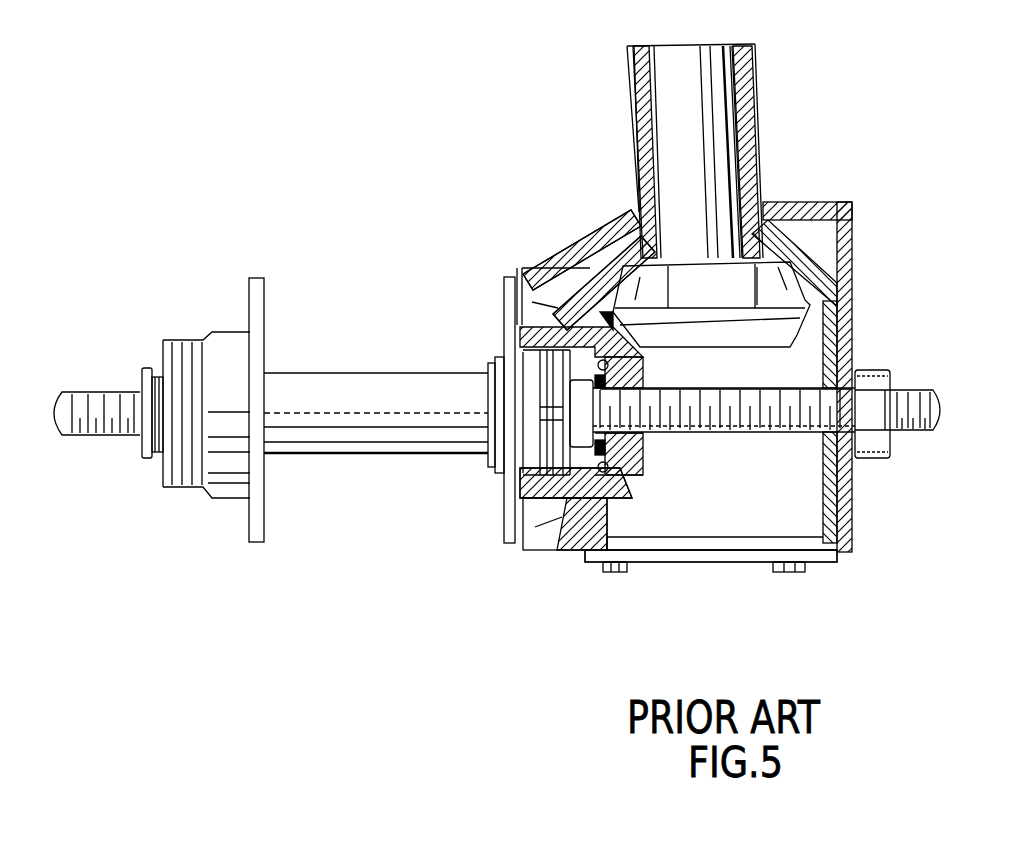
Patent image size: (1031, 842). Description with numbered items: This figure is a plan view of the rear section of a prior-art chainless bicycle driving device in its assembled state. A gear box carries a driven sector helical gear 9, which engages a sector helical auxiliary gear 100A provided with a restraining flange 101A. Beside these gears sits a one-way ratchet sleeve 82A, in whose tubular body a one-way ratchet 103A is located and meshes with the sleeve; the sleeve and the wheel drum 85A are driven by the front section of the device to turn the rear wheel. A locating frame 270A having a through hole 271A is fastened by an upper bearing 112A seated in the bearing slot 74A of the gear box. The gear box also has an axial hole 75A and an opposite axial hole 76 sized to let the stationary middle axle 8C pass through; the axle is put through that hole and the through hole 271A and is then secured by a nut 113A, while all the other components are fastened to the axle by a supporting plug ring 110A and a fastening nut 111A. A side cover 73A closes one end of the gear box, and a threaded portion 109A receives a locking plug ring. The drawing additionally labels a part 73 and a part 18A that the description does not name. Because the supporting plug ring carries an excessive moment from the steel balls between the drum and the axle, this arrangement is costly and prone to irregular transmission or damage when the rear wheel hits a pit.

The drive shaft tube 73 is at (717, 85).
The one-way ratchet sleeve 82A is at (520, 300).
The one-way ratchet 103A is at (544, 213).
The upper bearing 112A is at (555, 300).
The bearing slot 74A is at (592, 259).
The wheel drum 85A is at (325, 360).
The locating frame 270A is at (852, 245).
The sector helical gear 9 is at (843, 303).
The through hole 271A is at (852, 362).
The nut 113A is at (880, 383).
The fastening nut 111A is at (643, 366).
The supporting plug ring 110A is at (643, 453).
The axial hole 76 is at (822, 437).
The middle axle 8C is at (757, 435).
The restraining flange 101A is at (512, 520).
The sector helical auxiliary gear 100A is at (588, 500).
The axial hole 75A is at (552, 582).
The housing base 18A is at (707, 586).
The threaded portion 109A is at (702, 607).
The side cover 73A is at (706, 553).